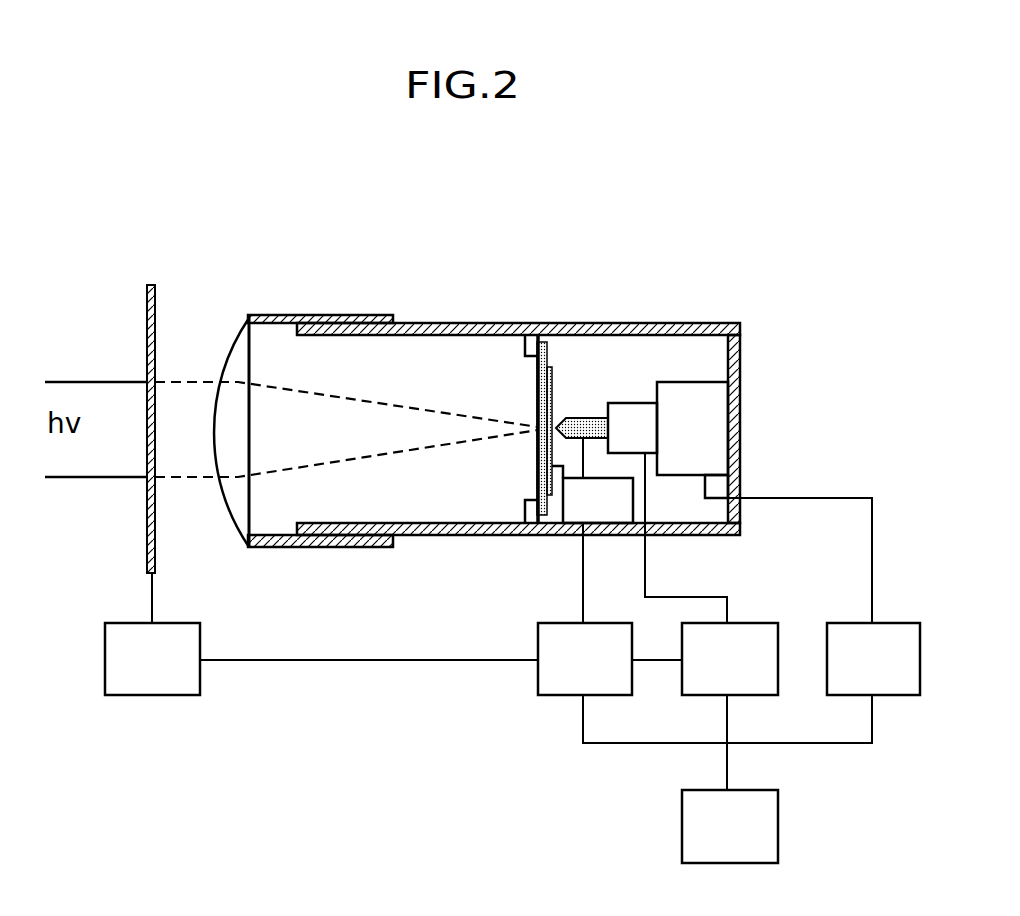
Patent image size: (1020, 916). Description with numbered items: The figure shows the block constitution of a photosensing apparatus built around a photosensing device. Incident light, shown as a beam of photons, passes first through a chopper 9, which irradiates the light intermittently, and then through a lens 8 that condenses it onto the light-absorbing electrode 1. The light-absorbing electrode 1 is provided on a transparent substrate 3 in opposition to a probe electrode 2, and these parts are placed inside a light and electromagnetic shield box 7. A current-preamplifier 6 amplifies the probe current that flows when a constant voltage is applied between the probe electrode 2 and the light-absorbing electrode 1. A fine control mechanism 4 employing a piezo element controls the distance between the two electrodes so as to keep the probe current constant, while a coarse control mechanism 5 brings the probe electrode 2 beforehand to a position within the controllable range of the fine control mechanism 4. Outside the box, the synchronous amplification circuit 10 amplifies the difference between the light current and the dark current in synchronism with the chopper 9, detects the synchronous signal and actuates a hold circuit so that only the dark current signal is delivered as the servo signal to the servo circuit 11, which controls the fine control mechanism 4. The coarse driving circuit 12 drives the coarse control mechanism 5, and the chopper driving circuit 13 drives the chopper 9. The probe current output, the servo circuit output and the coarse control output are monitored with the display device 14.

The light-absorbing electrode 1 is at (553, 368).
The probe electrode 2 is at (589, 416).
The transparent substrate 3 is at (535, 373).
The fine control mechanism 4 is at (640, 402).
The coarse control mechanism 5 is at (713, 398).
The current-preamplifier 6 is at (578, 516).
The light and electromagnetic shield box 7 is at (733, 442).
The lens 8 is at (236, 340).
The chopper 9 is at (157, 297).
The synchronous amplification circuit 10 is at (598, 682).
The servo circuit 11 is at (747, 682).
The coarse driving circuit 12 is at (885, 682).
The chopper driving circuit 13 is at (147, 687).
The display device 14 is at (768, 818).